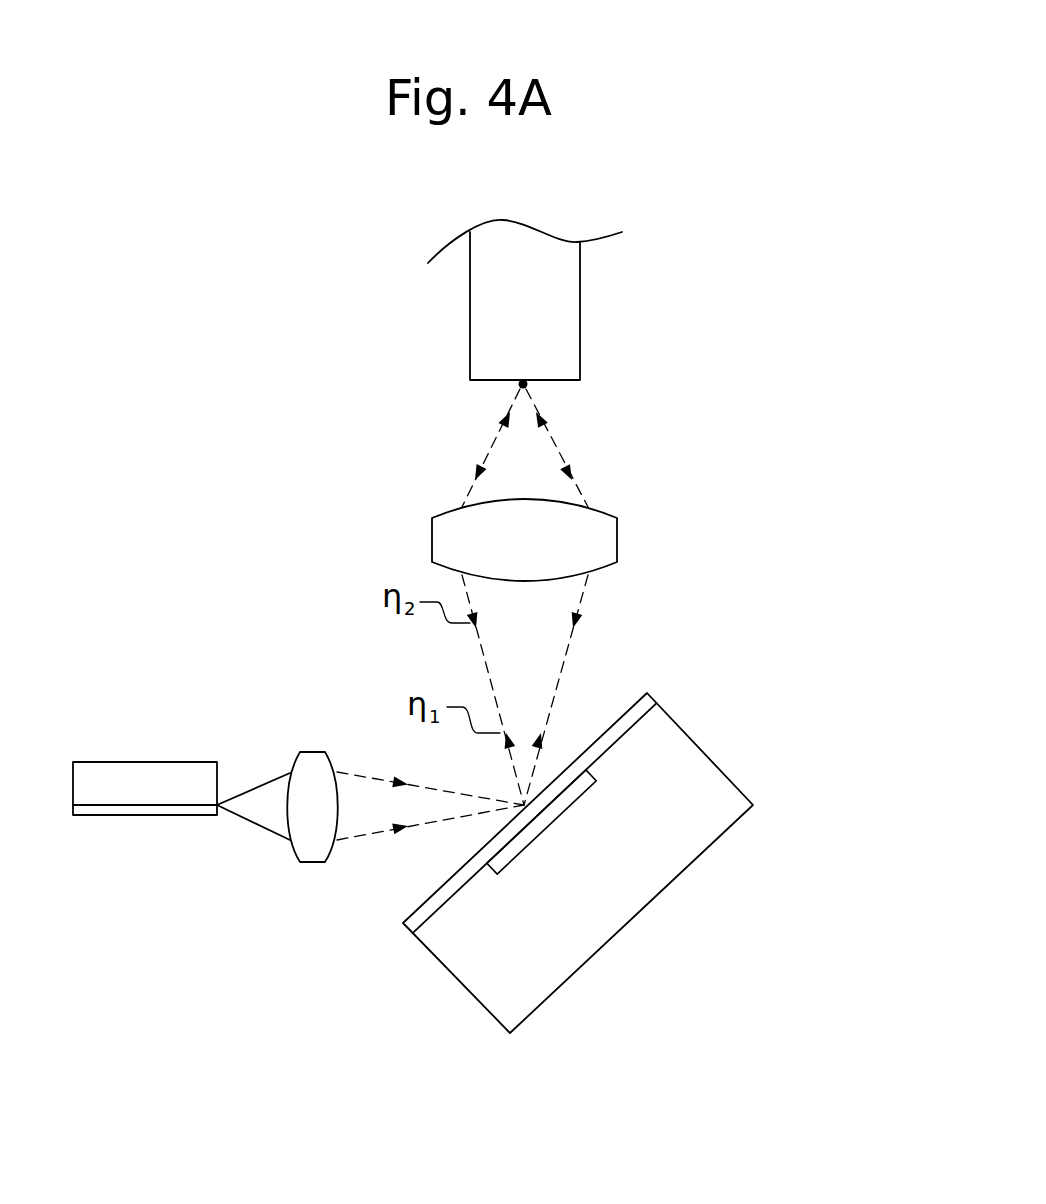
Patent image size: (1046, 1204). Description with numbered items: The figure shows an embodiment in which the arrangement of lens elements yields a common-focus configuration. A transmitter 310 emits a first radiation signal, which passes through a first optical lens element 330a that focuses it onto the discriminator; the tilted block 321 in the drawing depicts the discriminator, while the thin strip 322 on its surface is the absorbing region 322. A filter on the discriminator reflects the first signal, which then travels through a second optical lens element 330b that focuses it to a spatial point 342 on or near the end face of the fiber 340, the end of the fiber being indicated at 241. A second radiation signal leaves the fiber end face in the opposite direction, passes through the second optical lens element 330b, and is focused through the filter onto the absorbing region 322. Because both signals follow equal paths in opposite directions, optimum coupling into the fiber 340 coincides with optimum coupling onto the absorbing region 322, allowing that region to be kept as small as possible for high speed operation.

The transmitter 310 is at (135, 780).
The first optical lens element 330a is at (310, 845).
The second optical lens element 330b is at (587, 542).
The fiber 340 is at (557, 303).
The spatial point 342 is at (531, 385).
The detector surface 241 is at (482, 380).
The substrate 321 is at (683, 763).
The absorbing region 322 is at (545, 820).